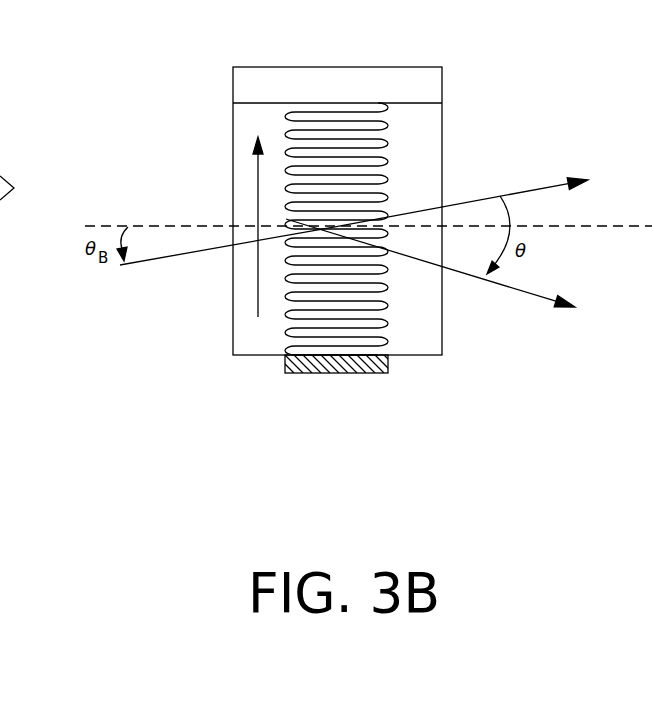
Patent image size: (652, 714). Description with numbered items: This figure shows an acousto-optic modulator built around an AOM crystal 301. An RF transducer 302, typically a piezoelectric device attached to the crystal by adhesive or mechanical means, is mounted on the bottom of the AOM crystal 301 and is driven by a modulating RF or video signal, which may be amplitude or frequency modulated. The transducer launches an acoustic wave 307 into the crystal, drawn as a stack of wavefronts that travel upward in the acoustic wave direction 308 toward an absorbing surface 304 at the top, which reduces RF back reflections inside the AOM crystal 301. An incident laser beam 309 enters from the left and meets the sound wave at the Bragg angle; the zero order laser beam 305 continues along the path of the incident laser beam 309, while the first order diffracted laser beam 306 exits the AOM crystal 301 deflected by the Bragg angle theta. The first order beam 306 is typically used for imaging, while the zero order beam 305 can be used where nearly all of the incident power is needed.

The AOM crystal 301 is at (423, 320).
The RF transducer 302 is at (325, 362).
The absorbing surface 304 is at (321, 77).
The zero order laser beam 305 is at (543, 185).
The first order diffracted laser beam 306 is at (527, 290).
The acoustic wave 307 is at (384, 158).
The acoustic wave direction 308 is at (233, 212).
The incident laser beam 309 is at (148, 261).